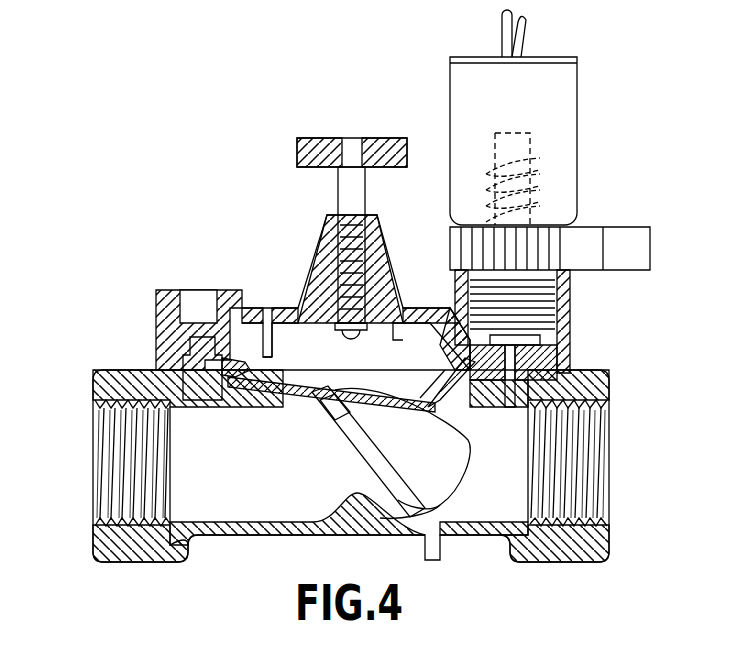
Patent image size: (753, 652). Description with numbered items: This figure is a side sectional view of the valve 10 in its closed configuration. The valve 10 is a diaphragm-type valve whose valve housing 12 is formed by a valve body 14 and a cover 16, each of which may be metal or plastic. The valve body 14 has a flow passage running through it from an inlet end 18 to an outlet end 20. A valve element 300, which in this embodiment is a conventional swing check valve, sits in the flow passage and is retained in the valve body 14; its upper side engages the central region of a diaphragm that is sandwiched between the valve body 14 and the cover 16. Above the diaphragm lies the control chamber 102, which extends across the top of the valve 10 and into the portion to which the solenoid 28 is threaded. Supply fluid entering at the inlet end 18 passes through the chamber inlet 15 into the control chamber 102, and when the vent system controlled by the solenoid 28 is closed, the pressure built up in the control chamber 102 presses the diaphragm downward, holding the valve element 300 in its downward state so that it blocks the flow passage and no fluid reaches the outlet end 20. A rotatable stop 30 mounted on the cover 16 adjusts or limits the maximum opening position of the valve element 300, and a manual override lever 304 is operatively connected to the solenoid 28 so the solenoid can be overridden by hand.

The valve 10 is at (163, 182).
The valve housing 12 is at (240, 254).
The valve body 14 is at (98, 372).
The chamber inlet 15 is at (206, 388).
The cover 16 is at (156, 300).
The inlet end 18 is at (98, 466).
The outlet end 20 is at (605, 457).
The solenoid 28 is at (455, 72).
The rotatable stop 30 is at (297, 148).
The control chamber 102 is at (305, 335).
The valve element 300 is at (450, 492).
The manual override lever 304 is at (625, 270).